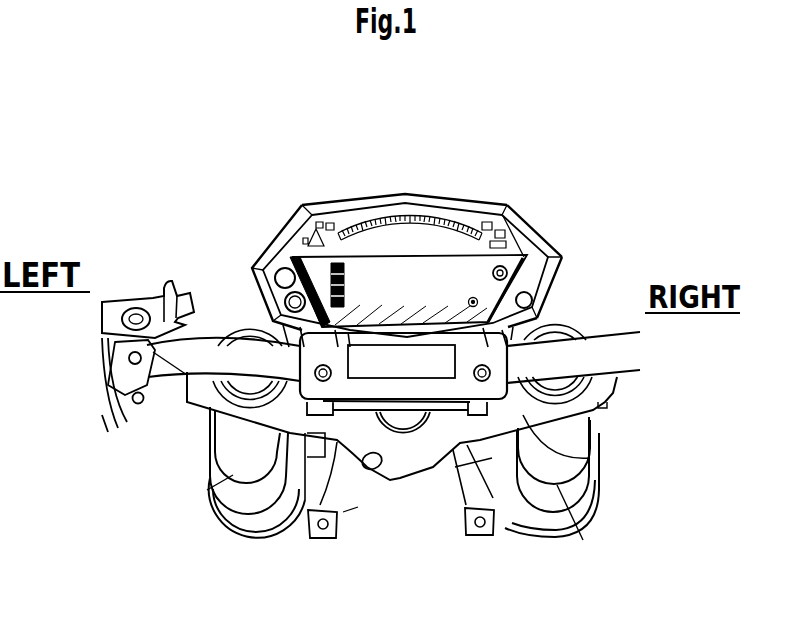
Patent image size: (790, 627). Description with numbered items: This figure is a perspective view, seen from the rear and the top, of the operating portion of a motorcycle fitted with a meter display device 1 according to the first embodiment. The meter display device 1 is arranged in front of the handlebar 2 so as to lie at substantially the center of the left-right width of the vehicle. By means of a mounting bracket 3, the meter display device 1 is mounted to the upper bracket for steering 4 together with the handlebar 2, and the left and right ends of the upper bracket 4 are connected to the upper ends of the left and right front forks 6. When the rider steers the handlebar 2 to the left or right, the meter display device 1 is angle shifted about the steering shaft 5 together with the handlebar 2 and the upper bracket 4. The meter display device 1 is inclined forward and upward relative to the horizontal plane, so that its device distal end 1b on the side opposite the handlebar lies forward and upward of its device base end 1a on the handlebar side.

The meter display device 1 is at (397, 326).
The device base end 1a is at (417, 350).
The device distal end 1b is at (405, 195).
The handlebar 2 is at (192, 402).
The mounting bracket 3 is at (493, 357).
The upper bracket for steering 4 is at (592, 462).
The steering shaft 5 is at (397, 407).
The front forks 6 is at (233, 475).